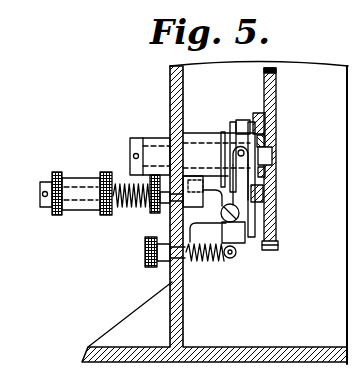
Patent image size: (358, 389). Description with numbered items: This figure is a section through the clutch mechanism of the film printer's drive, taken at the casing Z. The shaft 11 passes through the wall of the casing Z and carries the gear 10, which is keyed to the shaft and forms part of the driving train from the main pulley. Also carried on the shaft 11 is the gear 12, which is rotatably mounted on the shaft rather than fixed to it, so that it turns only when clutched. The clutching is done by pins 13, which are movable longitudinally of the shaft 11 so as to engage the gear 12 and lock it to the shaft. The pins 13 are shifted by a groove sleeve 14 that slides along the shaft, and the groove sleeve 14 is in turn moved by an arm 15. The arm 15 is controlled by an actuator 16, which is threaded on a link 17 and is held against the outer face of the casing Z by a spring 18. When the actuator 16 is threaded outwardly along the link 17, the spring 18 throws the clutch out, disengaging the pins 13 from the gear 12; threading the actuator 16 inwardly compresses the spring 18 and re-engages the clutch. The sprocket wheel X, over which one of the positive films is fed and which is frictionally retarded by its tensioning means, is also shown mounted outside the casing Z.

The gear 10 is at (277, 95).
The shaft 11 is at (155, 138).
The gear 12 is at (253, 215).
The pins 13 is at (270, 129).
The groove sleeve 14 is at (241, 121).
The arm 15 is at (238, 228).
The actuator 16 is at (150, 268).
The link 17 is at (204, 263).
The spring 18 is at (193, 263).
The sprocket wheel X is at (95, 158).
The casing Z is at (172, 303).